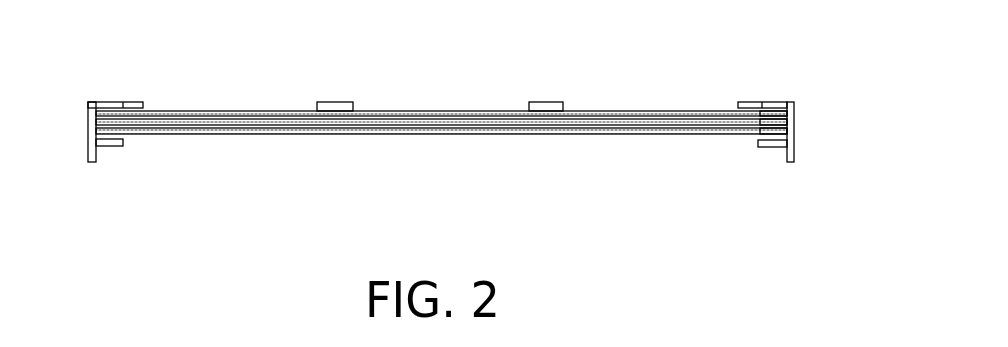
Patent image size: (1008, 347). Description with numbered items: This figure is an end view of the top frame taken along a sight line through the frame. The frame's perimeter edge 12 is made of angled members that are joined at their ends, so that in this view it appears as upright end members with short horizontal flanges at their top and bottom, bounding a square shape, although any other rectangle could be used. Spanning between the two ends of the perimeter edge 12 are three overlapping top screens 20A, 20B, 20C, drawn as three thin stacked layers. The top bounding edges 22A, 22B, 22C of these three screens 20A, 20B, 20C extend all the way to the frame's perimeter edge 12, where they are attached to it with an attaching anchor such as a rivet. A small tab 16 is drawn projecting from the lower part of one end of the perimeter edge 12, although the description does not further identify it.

The perimeter edge 12 is at (88, 108).
The mounting tab 16 is at (110, 146).
The top screen 20A is at (385, 134).
The top screen 20B is at (573, 126).
The top screen 20C is at (635, 114).
The top bounding edge 22A is at (784, 134).
The top bounding edge 22B is at (786, 126).
The top bounding edge 22C is at (784, 114).